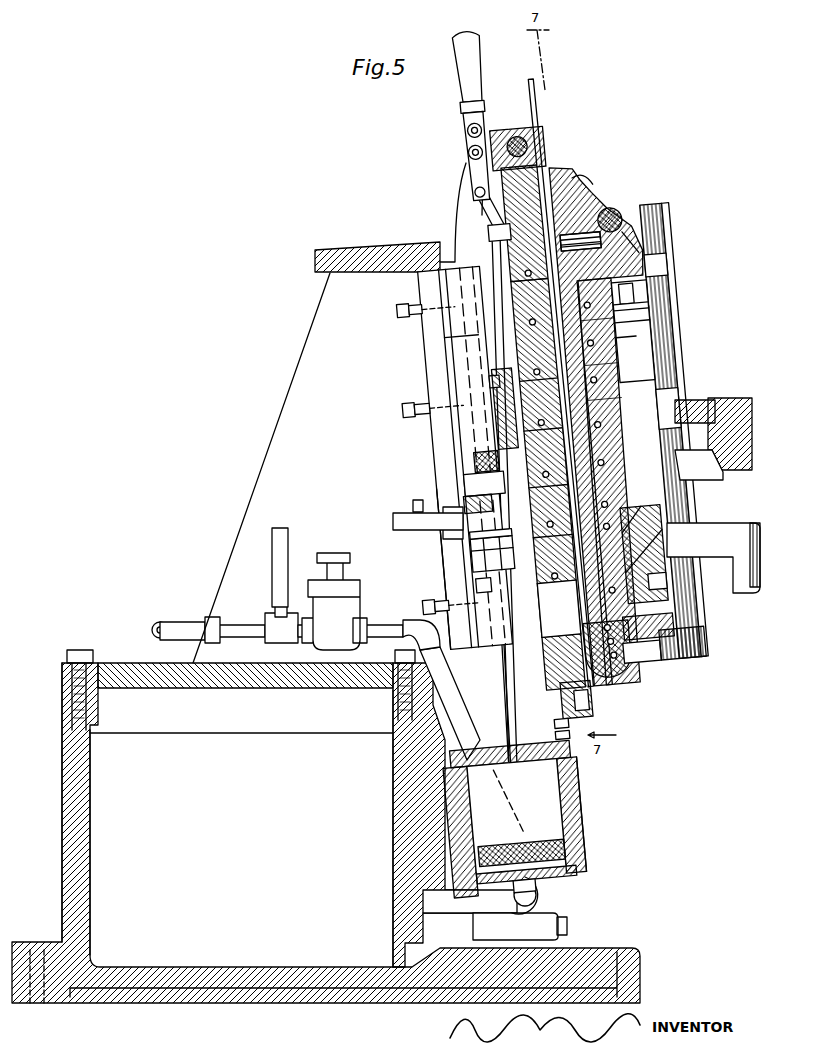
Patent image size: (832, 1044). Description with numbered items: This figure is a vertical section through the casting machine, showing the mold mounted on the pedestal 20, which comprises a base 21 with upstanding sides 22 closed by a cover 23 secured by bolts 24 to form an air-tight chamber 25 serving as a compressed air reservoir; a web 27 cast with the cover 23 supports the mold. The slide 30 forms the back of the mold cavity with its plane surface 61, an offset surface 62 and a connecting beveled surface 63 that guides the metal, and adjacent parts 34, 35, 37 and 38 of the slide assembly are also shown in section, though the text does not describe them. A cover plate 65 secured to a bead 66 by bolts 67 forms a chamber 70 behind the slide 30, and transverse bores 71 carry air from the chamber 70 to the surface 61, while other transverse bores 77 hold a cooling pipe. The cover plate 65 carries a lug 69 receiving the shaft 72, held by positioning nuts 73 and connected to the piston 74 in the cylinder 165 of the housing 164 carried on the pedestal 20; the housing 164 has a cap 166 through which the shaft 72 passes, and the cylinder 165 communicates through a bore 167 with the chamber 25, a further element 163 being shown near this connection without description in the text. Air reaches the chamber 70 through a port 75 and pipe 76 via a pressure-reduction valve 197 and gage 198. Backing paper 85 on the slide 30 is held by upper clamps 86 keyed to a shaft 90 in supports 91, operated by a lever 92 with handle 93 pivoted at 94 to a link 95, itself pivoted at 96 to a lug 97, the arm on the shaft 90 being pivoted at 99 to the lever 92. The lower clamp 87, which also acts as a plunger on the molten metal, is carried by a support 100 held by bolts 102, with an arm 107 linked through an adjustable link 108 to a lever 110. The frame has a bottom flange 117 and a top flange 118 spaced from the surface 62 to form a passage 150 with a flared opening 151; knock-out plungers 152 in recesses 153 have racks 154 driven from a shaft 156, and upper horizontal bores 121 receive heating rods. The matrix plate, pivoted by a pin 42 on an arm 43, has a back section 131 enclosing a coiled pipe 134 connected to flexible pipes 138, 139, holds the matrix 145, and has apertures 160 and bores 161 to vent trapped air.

The hollow pedestal 20 is at (62, 780).
The base 21 is at (258, 990).
The upstanding sides 22 is at (412, 806).
The cover 23 is at (240, 672).
The bolts 24 is at (82, 655).
The air-tight chamber 25 is at (241, 828).
The web 27 is at (272, 432).
The backing member or slide 30 is at (440, 364).
The clamp screw 34 is at (470, 291).
The frame bar 35 is at (462, 334).
The clamp screw 37 is at (412, 409).
The frame member 38 is at (440, 455).
The pin 42 is at (675, 395).
The arm 43 is at (745, 424).
The plane surface 61 is at (520, 418).
The offset surface 62 is at (510, 229).
The beveled surface 63 is at (505, 318).
The cover plate 65 is at (490, 536).
The bead 66 is at (503, 415).
The bolts 67 is at (500, 378).
The lug 69 is at (464, 490).
The chamber 70 is at (480, 552).
The transverse bores 71 is at (548, 620).
The shaft 72 is at (498, 660).
The positioning nuts 73 is at (466, 474).
The piston 74 is at (488, 845).
The transverse port 75 is at (470, 528).
The pipe 76 is at (175, 625).
The transverse bores 77 is at (492, 303).
The backing paper 85 is at (536, 120).
The upper clamps 86 is at (546, 172).
The lower clamp 87 is at (608, 657).
The shaft 90 is at (535, 150).
The supports 91 is at (522, 135).
The lever 92 is at (483, 113).
The handle 93 is at (477, 62).
The pivot 94 is at (468, 152).
The link 95 is at (470, 168).
The pivot 96 is at (480, 198).
The lug 97 is at (491, 211).
The pivot 99 is at (468, 130).
The support 100 is at (592, 705).
The bolts 102 is at (590, 729).
The arm 107 is at (530, 700).
The adjustable link 108 is at (454, 210).
The lever 110 is at (664, 644).
The bottom flange 117 is at (600, 612).
The top flange 118 is at (568, 285).
The upper horizontal bores 121 is at (605, 200).
The back section 131 is at (625, 560).
The coiled pipe 134 is at (650, 549).
The flexible pipe 138 is at (650, 305).
The flexible pipe 139 is at (662, 592).
The matrix 145 is at (650, 416).
The passage 150 is at (590, 184).
The flared opening 151 is at (568, 180).
The knock-out plungers 152 is at (600, 238).
The transverse recesses 153 is at (636, 212).
The racks 154 is at (658, 232).
The shaft 156 is at (650, 232).
The apertures 160 is at (660, 320).
The bores 161 is at (645, 372).
The pivot 163 is at (545, 898).
The housing 164 is at (556, 802).
The cylinder 165 is at (552, 792).
The cap 166 is at (568, 760).
The bore 167 is at (500, 905).
The pressure-reduction valve 197 is at (350, 608).
The gage 198 is at (285, 545).